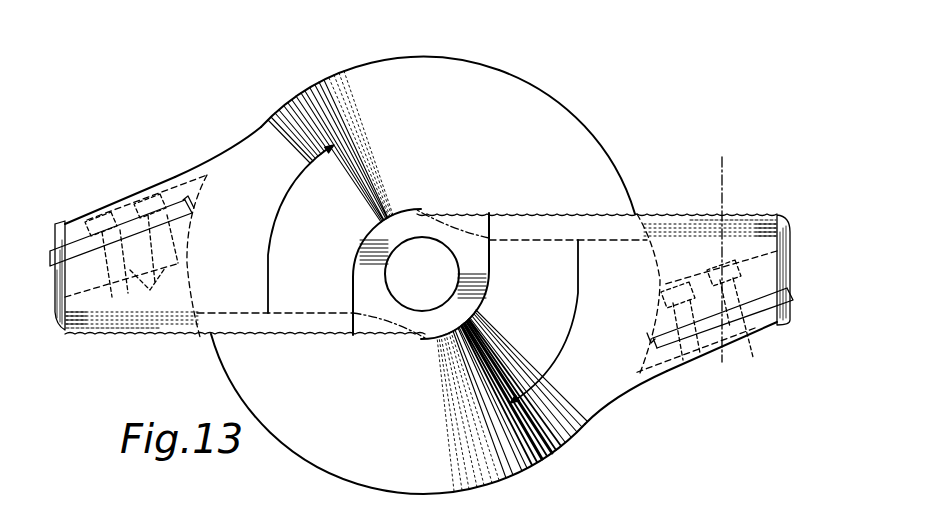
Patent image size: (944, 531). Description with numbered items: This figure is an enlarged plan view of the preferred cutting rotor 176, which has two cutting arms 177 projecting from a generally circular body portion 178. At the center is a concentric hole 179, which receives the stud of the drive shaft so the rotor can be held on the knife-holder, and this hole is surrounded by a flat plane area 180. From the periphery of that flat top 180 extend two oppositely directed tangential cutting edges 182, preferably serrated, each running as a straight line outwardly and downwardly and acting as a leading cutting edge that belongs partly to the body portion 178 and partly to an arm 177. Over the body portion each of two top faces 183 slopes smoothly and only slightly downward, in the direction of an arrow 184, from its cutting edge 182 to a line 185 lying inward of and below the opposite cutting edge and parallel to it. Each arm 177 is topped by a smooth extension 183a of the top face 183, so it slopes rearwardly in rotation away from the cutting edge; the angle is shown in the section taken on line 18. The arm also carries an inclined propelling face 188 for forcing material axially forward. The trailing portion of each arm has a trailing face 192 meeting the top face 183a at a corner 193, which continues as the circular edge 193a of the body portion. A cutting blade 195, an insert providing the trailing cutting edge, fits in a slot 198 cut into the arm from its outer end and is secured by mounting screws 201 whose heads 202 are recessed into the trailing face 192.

The section line 18- 18 is at (735, 157).
The rotor 176 is at (484, 59).
The cutting arm 177 is at (50, 301).
The body portion 178 is at (508, 118).
The concentric hole 179 is at (421, 241).
The plane area 180 is at (476, 268).
The cutting edge 182 is at (189, 336).
The top face 183 is at (233, 249).
The extension of top face 183a is at (162, 316).
The arrow 184 is at (270, 212).
The line 185 is at (300, 312).
The propelling face 188 is at (780, 213).
The trailing face 192 is at (55, 226).
The corner 193 is at (117, 205).
The circular edge 193a is at (313, 83).
The cutting blade 195 is at (177, 203).
The slot 198 is at (191, 209).
The mounting screw 201 is at (156, 283).
The screw head 202 is at (150, 196).